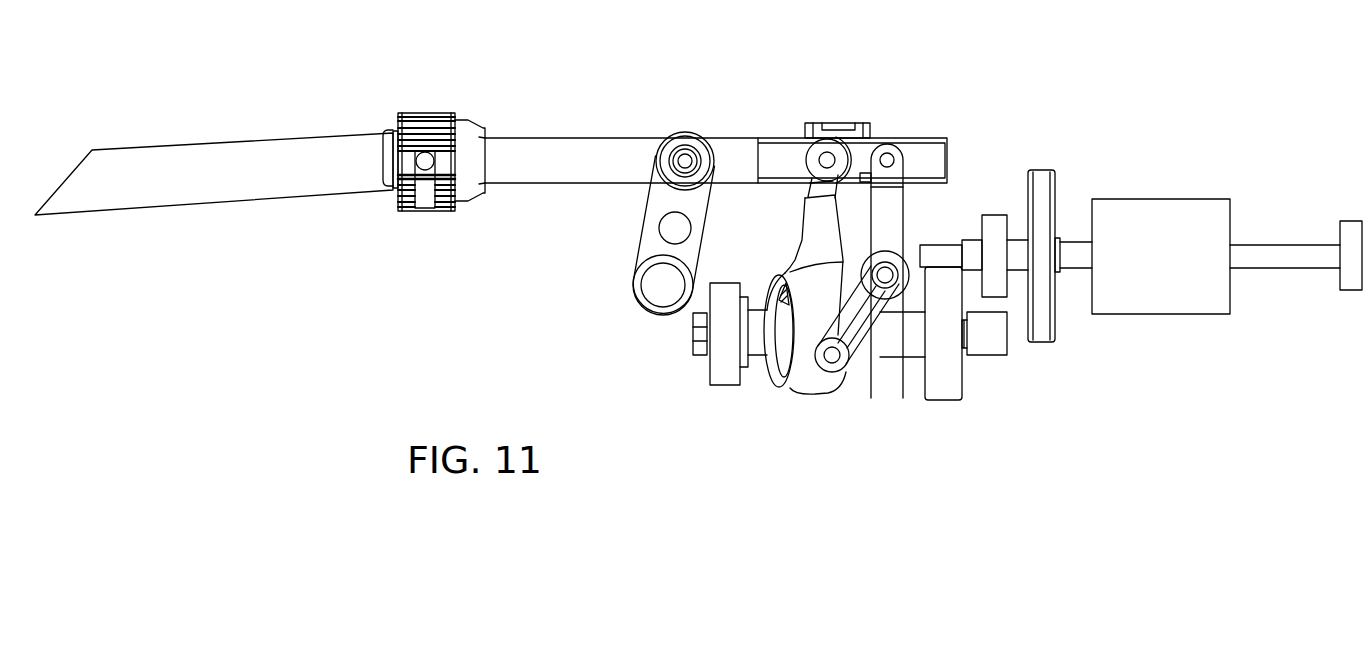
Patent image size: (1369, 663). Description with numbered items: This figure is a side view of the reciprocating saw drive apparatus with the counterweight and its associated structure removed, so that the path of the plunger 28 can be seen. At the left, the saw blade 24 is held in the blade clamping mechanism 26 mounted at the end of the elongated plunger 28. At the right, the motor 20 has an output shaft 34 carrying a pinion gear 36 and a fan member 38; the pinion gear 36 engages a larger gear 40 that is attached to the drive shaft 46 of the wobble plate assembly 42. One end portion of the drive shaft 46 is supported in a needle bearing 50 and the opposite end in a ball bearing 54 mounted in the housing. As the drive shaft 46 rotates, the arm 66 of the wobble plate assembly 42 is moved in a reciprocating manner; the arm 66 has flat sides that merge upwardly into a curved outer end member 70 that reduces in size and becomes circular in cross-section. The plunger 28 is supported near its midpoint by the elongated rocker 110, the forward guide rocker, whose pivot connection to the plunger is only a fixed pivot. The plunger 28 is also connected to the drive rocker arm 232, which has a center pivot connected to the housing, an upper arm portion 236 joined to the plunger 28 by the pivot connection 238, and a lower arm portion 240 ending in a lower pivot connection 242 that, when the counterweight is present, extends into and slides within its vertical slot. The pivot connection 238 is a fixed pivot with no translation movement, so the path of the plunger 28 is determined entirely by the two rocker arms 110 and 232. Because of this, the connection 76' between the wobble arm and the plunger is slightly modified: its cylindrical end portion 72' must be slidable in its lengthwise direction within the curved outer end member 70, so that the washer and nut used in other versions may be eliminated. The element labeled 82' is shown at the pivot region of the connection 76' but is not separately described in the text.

The motor 20 is at (1169, 230).
The saw blade 24 is at (209, 177).
The blade clamping mechanism 26 is at (422, 113).
The plunger 28 is at (572, 160).
The output shaft 34 is at (973, 253).
The pinion gear 36 is at (937, 257).
The fan member 38 is at (1042, 330).
The gear 40 is at (943, 380).
The wobble plate assembly 42 is at (758, 404).
The drive shaft 46 is at (758, 345).
The needle bearing 50 is at (985, 340).
The ball bearing 54 is at (727, 372).
The arm 66 is at (807, 333).
The curved outer end member 70 is at (812, 263).
The cylindrical end portion 72' is at (783, 195).
The connection 76' is at (837, 98).
The pivot 82' is at (810, 141).
The elongated rocker 110 is at (645, 218).
The drive rocker arm 232 is at (913, 198).
The upper arm portion 236 is at (880, 218).
The pivot connection 238 is at (888, 153).
The lower arm portion 240 is at (882, 345).
The lower pivot connection 242 is at (834, 360).